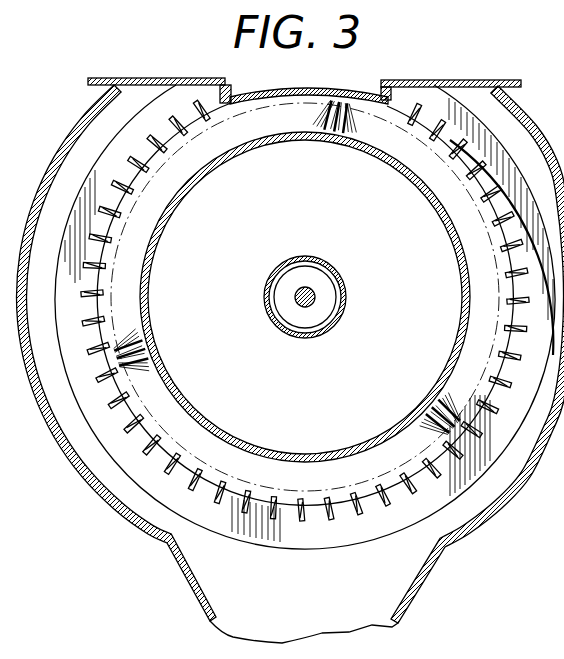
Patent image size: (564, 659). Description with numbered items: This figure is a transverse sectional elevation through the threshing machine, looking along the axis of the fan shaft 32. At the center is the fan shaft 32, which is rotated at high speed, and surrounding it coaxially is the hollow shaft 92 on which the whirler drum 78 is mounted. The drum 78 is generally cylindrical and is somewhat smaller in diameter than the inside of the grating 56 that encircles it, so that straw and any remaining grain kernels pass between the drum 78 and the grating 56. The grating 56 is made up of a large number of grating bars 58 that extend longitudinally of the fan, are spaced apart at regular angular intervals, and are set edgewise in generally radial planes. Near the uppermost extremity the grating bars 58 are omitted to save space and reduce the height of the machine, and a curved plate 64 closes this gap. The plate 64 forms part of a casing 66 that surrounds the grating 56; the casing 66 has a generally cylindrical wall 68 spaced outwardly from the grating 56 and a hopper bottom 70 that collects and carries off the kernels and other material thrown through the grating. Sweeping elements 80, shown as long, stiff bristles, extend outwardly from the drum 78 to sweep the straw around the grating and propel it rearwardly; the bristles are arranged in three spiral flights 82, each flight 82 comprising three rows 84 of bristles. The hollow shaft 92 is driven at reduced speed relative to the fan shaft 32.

The shaft 32 is at (314, 290).
The grating 56 is at (543, 43).
The grating bars 58 is at (439, 478).
The curved plate 64 is at (332, 87).
The casing 66 is at (103, 527).
The cylindrical wall 68 is at (78, 470).
The hopper bottom 70 is at (193, 593).
The drum 78 is at (487, 330).
The sweeping elements 80 is at (128, 347).
The flights 82 is at (358, 122).
The rows 84 is at (328, 115).
The hollow shaft 92 is at (346, 298).